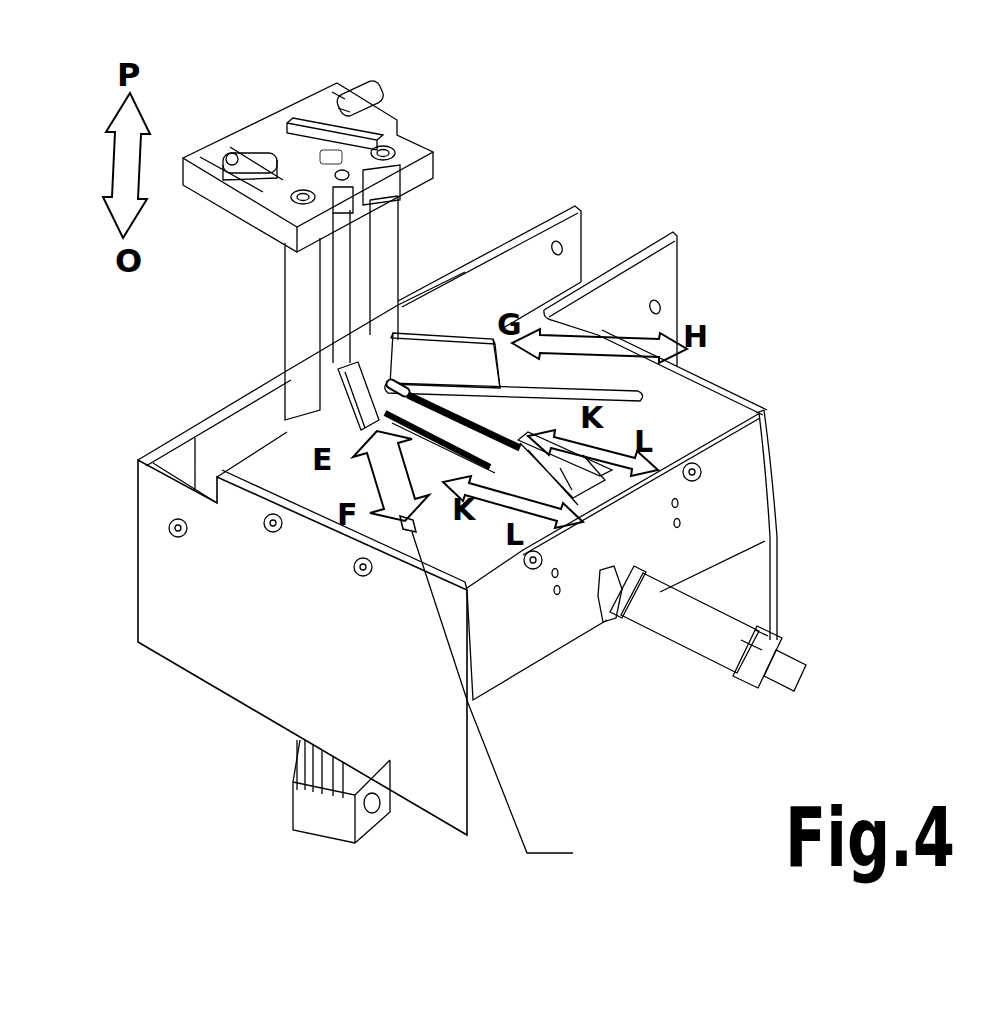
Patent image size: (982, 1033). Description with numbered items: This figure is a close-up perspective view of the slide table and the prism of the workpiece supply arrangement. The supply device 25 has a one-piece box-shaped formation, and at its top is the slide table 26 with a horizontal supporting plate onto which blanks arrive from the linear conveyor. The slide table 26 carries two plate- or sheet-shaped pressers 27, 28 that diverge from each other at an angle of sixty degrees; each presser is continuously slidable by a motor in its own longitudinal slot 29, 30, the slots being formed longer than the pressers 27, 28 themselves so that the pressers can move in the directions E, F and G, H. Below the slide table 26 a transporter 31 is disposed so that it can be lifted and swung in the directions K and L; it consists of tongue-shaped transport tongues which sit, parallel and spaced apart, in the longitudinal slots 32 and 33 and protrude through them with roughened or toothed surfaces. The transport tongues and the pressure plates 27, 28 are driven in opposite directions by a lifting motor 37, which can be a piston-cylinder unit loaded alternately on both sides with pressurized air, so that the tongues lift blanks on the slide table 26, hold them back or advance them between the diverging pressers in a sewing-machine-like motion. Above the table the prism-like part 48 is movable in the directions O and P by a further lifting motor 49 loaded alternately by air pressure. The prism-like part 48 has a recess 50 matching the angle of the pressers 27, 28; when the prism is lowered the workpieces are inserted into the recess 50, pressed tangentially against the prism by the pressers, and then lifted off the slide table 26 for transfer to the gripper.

The supply device 25 is at (297, 612).
The slide table 26 is at (750, 402).
The presser 27 is at (338, 405).
The presser 28 is at (442, 365).
The longitudinal slot 29 is at (430, 430).
The longitudinal slot 30 is at (640, 397).
The transporter 31 is at (462, 430).
The longitudinal slot 32 is at (560, 500).
The longitudinal slot 33 is at (583, 472).
The lifting motor 37 is at (703, 635).
The prism-like part 48 is at (433, 150).
The lifting motor 49 is at (317, 812).
The recess 50 is at (317, 165).